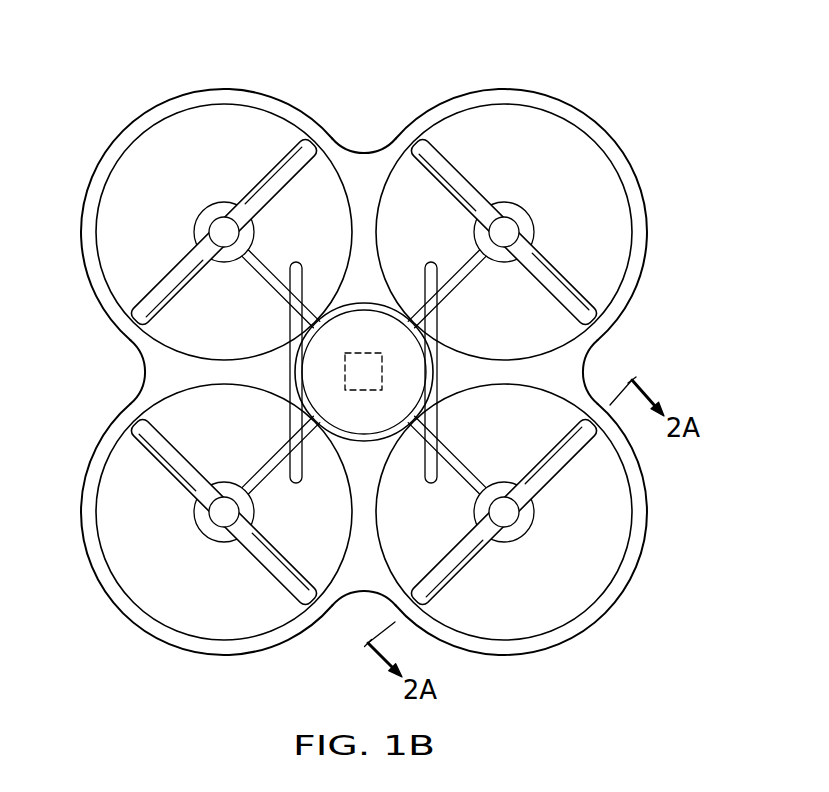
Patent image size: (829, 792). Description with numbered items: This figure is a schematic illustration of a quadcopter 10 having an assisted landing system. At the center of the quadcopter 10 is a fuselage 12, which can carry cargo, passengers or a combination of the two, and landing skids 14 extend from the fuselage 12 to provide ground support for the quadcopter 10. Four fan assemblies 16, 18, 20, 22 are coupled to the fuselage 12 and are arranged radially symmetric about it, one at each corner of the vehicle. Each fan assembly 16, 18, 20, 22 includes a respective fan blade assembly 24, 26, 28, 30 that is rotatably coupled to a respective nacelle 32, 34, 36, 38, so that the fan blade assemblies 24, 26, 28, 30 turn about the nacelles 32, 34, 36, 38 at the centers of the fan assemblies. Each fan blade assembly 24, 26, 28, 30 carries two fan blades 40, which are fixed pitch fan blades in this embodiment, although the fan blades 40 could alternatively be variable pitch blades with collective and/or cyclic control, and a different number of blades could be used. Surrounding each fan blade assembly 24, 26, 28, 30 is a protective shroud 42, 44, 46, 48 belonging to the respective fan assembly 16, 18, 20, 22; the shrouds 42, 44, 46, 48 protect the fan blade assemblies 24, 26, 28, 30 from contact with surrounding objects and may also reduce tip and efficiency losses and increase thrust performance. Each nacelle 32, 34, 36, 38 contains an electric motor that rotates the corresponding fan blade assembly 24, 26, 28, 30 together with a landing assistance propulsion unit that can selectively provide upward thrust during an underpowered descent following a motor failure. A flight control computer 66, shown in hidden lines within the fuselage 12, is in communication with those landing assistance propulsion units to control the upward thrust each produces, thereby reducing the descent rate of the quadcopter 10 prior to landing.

The quadcopter 10 is at (363, 339).
The fuselage 12 is at (420, 375).
The landing skids 14 is at (297, 262).
The fan assembly 16 is at (128, 555).
The fan assembly 18 is at (600, 556).
The fan assembly 20 is at (600, 190).
The fan assembly 22 is at (130, 190).
The fan blade assembly 24 is at (215, 518).
The fan blade assembly 26 is at (512, 522).
The fan blade assembly 28 is at (512, 222).
The fan blade assembly 30 is at (212, 222).
The nacelle 32 is at (234, 484).
The nacelle 34 is at (502, 483).
The nacelle 36 is at (532, 228).
The nacelle 38 is at (228, 262).
The fan blades 40 is at (165, 275).
The protective shroud 42 is at (82, 512).
The protective shroud 44 is at (647, 512).
The protective shroud 46 is at (648, 235).
The protective shroud 48 is at (82, 233).
The flight control computer 66 is at (363, 390).